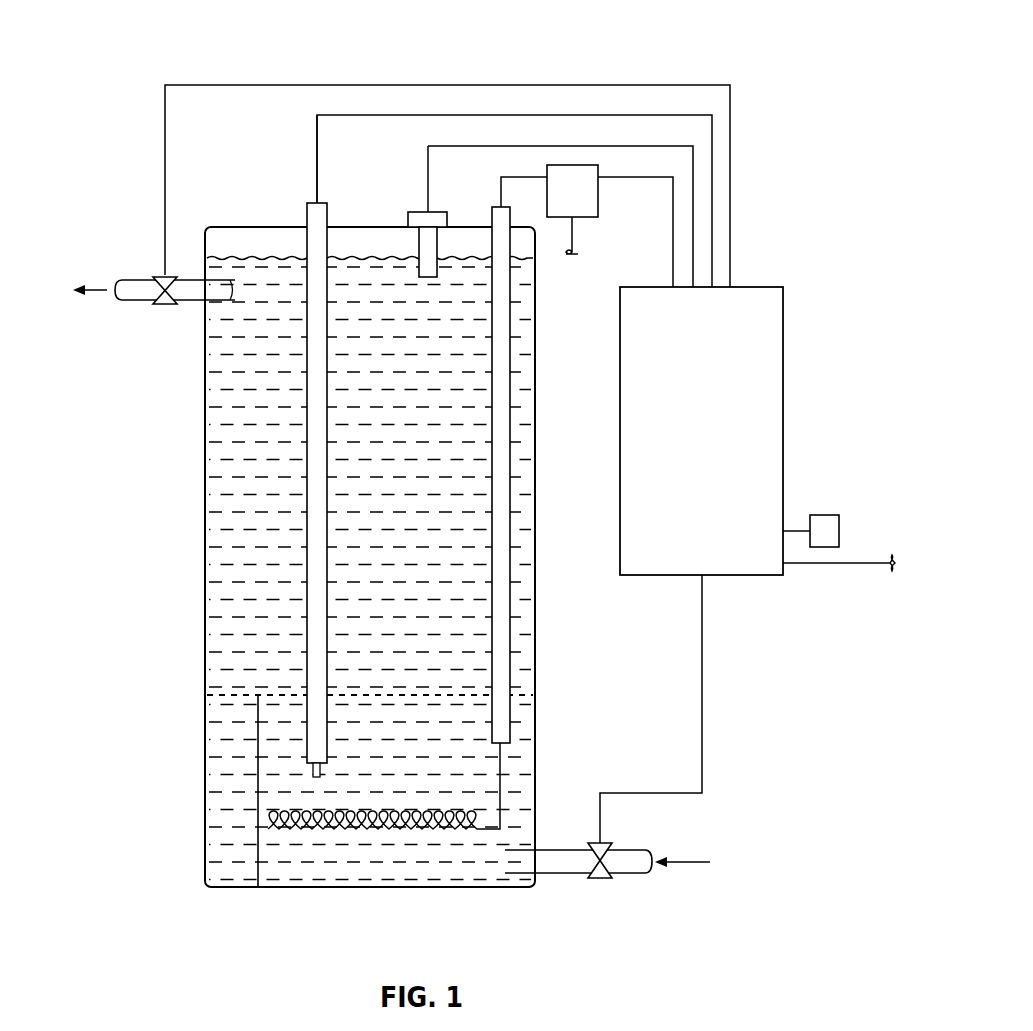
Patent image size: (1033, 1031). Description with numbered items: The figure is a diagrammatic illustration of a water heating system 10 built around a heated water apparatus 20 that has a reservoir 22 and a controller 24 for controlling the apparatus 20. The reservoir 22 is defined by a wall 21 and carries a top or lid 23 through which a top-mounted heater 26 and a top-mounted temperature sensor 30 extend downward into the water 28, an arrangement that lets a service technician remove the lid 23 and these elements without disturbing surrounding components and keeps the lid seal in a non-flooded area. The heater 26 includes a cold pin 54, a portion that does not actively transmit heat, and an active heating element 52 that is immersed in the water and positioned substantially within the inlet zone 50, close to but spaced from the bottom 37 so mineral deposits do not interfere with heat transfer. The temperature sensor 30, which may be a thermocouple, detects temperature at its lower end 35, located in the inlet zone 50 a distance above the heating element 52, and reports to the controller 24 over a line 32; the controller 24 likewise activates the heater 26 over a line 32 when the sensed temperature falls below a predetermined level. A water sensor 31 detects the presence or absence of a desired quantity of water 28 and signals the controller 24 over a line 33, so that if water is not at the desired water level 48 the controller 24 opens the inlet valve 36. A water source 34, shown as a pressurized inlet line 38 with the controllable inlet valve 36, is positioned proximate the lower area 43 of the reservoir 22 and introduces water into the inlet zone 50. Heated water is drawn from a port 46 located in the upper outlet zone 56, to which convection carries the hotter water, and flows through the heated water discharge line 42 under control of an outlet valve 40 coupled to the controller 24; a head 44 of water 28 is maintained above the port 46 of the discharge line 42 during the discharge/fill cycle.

The water heating system 10 is at (158, 46).
The heated water apparatus 20 is at (546, 583).
The wall 21 is at (204, 447).
The reservoir 22 is at (195, 642).
The top or lid 23 is at (353, 227).
The controller 24 is at (752, 287).
The heater 26 is at (401, 840).
The water 28 is at (448, 350).
The temperature sensor 30 is at (307, 480).
The water sensor 31 is at (420, 222).
The line 32 is at (317, 156).
The line 33 is at (478, 148).
The water source 34 is at (685, 860).
The lower end 35 is at (323, 770).
The inlet valve 36 is at (600, 878).
The bottom 37 is at (468, 886).
The inlet line 38 is at (565, 873).
The outlet valve 40 is at (163, 275).
The heated water discharge line 42 is at (125, 302).
The lower area 43 is at (232, 742).
The head 44 is at (237, 272).
The port 46 is at (225, 288).
The desired water level 48 is at (405, 262).
The inlet zone 50 is at (253, 784).
The active heating element 52 is at (335, 830).
The cold pin 54 is at (510, 462).
The outlet zone 56 is at (272, 372).